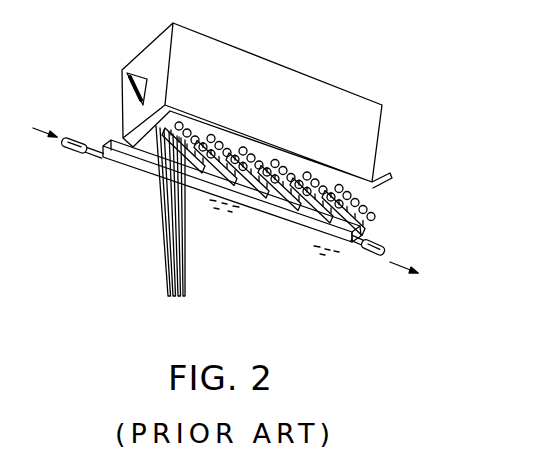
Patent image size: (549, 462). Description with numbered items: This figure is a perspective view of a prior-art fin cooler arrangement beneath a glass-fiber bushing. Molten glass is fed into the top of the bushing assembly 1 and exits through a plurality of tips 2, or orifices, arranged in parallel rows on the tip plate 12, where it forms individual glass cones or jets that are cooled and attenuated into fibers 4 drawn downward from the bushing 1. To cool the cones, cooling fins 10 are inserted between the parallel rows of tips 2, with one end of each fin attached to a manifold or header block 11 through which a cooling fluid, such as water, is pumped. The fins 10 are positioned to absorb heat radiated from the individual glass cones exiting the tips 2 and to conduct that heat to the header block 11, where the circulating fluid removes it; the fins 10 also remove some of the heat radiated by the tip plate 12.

The bushing assembly 1 is at (338, 76).
The tips 2 is at (310, 168).
The fibers 4 is at (162, 229).
The cooling fins 10 is at (350, 207).
The header block 11 is at (294, 238).
The tip plate 12 is at (349, 172).